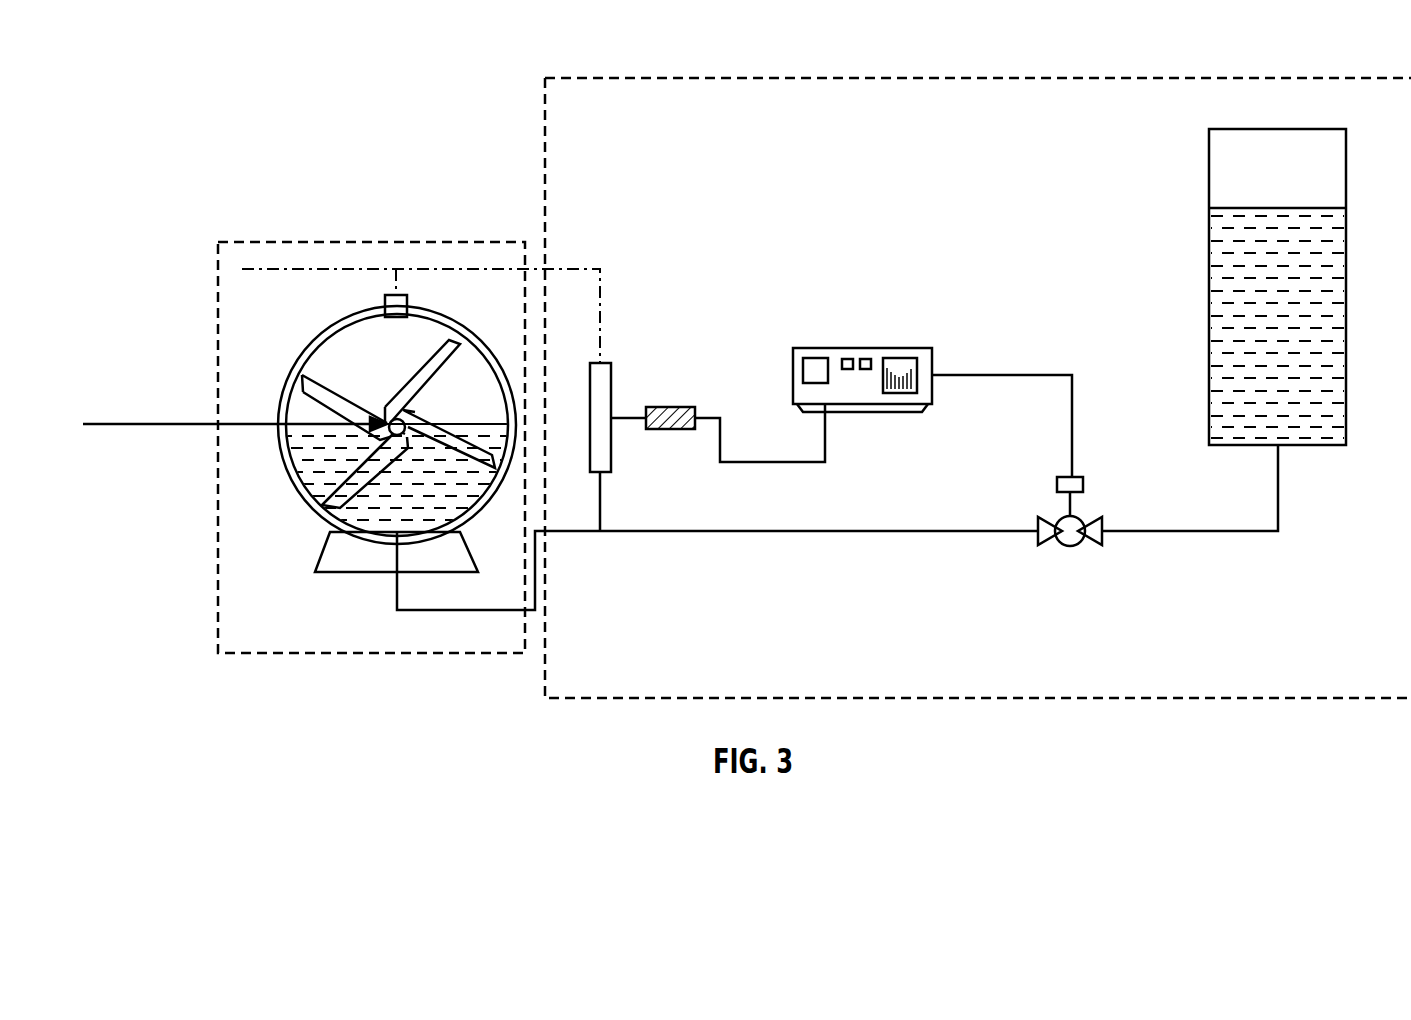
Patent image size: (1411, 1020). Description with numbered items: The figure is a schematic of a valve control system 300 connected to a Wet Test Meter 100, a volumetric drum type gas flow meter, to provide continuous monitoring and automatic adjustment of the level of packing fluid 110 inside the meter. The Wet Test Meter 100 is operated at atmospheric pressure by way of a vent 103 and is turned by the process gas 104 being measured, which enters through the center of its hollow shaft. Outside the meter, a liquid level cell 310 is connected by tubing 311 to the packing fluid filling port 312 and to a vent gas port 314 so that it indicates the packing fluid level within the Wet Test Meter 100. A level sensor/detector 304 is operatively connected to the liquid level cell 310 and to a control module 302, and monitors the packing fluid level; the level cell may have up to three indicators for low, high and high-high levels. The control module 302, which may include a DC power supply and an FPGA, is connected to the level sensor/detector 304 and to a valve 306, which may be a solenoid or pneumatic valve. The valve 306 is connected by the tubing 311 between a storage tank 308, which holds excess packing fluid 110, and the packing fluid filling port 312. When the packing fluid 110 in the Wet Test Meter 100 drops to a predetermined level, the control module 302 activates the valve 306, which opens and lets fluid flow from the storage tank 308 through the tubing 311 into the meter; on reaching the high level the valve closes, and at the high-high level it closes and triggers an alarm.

The Wet Test Meter 100 is at (355, 241).
The vent 103 is at (307, 272).
The process gas 104 is at (172, 424).
The packing fluid 110 is at (310, 473).
The valve control system 300 is at (1148, 77).
The control module 302 is at (865, 348).
The level sensor/detector 304 is at (663, 406).
The valve 306 is at (1071, 546).
The storage tank 308 is at (1237, 129).
The liquid level cell 310 is at (603, 362).
The tubing 311 is at (645, 532).
The packing fluid filling port 312 is at (398, 540).
The vent gas port 314 is at (408, 305).